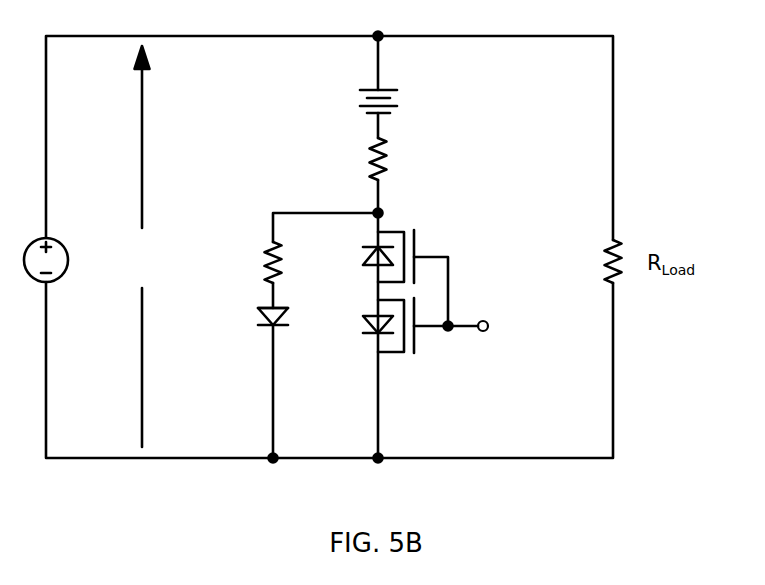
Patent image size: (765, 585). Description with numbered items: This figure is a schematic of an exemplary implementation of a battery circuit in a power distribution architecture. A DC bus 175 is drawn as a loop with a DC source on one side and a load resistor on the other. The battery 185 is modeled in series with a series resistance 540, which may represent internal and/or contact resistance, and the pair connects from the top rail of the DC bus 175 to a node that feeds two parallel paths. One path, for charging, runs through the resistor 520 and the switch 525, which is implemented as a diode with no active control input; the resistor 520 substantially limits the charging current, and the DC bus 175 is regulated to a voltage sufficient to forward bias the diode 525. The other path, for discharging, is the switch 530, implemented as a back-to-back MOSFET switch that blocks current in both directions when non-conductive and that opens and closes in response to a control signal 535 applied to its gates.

The DC bus 175 is at (142, 172).
The battery 185 is at (405, 103).
The series resistance 540 is at (397, 163).
The resistor 520 is at (262, 237).
The switch 525 is at (257, 316).
The switch 530 is at (420, 238).
The control signal 535 is at (466, 320).